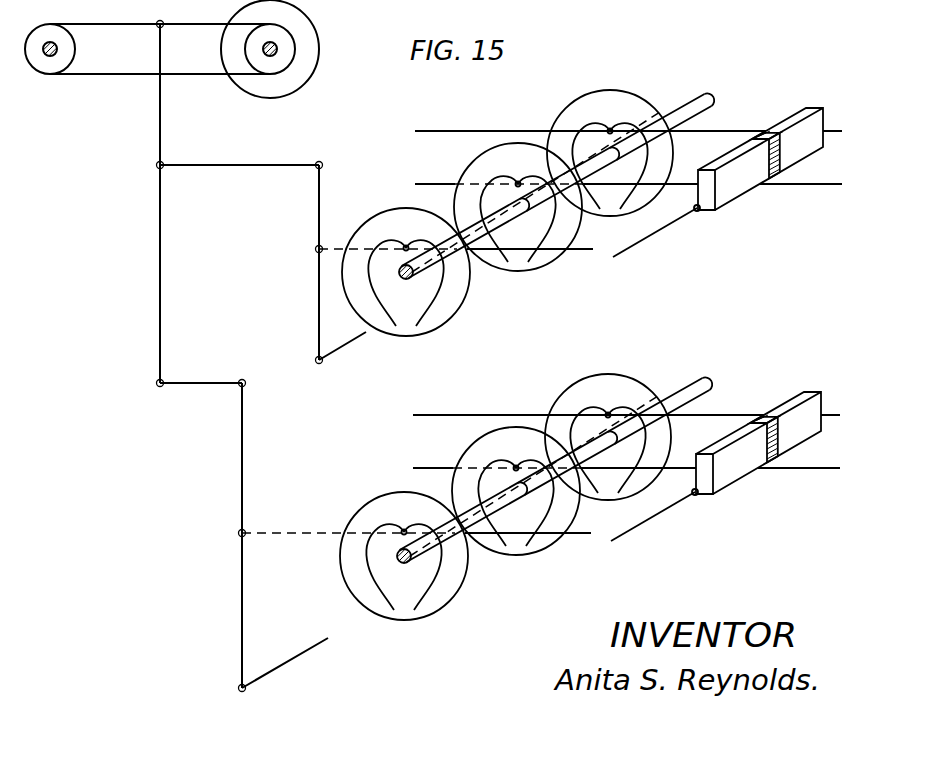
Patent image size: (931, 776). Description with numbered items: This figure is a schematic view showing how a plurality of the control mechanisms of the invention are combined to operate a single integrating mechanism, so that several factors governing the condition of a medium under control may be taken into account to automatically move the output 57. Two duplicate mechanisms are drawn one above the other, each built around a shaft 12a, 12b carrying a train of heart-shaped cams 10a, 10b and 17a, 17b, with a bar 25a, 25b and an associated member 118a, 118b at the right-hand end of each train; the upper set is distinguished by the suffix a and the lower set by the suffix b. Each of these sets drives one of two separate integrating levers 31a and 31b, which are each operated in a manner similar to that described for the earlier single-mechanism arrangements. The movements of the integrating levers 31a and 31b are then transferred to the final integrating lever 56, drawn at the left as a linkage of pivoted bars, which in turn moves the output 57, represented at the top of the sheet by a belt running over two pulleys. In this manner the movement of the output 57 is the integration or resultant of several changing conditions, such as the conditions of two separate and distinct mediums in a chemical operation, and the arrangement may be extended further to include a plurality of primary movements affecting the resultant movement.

The output 57 is at (310, 22).
The final integrating lever 56 is at (162, 217).
The integrating lever 31a is at (370, 263).
The integrating lever 31b is at (328, 537).
The heart-shaped cam 10a is at (454, 312).
The heart-shaped cam 10b is at (415, 557).
The heart-shaped cam 17a is at (556, 256).
The heart-shaped cam 17b is at (516, 503).
The cam shaft 12a is at (688, 90).
The cam shaft 12b is at (570, 453).
The slide bar 25a is at (811, 92).
The slide bar 25b is at (767, 429).
The lever arm 118a is at (656, 229).
The lever arm 118b is at (654, 514).